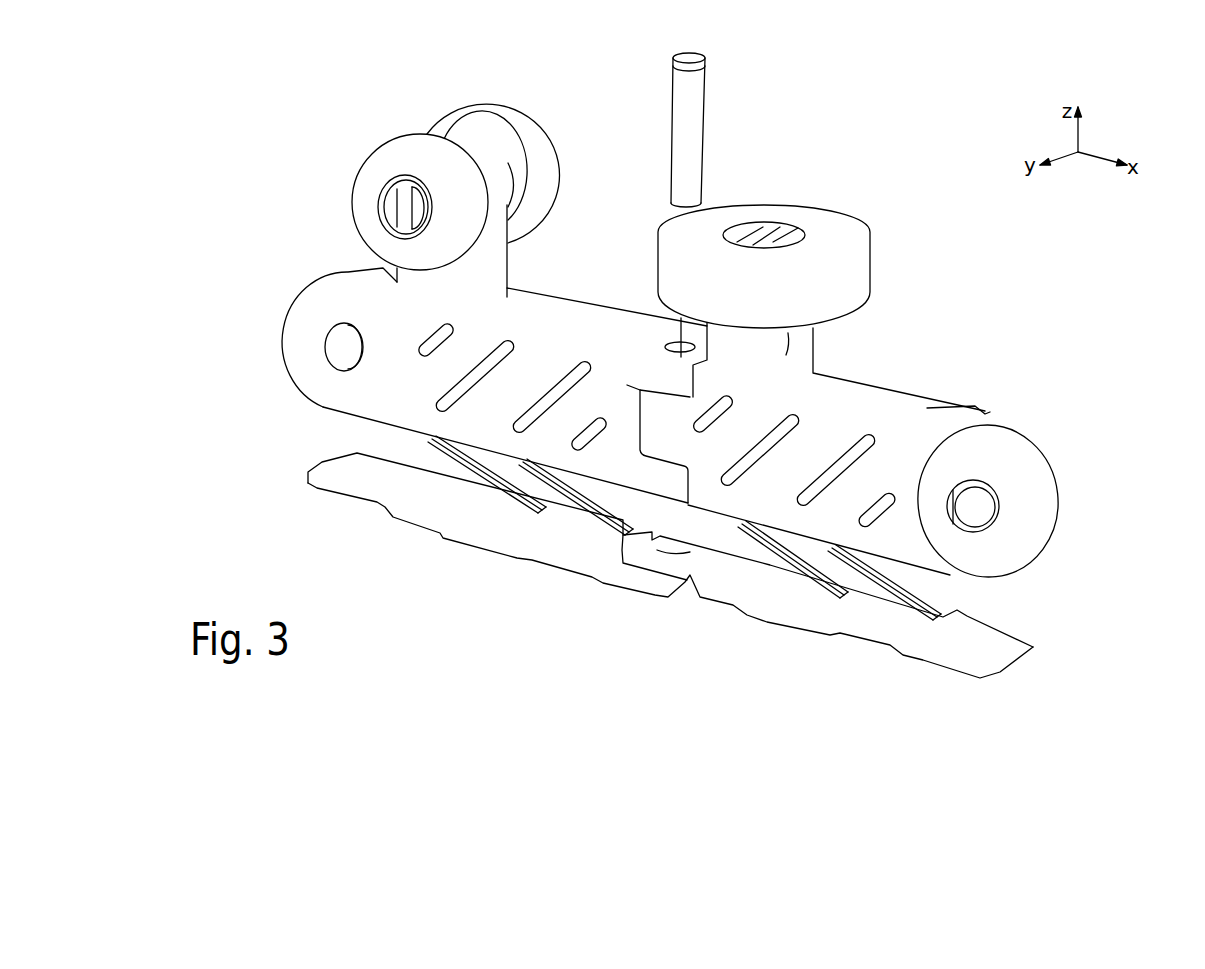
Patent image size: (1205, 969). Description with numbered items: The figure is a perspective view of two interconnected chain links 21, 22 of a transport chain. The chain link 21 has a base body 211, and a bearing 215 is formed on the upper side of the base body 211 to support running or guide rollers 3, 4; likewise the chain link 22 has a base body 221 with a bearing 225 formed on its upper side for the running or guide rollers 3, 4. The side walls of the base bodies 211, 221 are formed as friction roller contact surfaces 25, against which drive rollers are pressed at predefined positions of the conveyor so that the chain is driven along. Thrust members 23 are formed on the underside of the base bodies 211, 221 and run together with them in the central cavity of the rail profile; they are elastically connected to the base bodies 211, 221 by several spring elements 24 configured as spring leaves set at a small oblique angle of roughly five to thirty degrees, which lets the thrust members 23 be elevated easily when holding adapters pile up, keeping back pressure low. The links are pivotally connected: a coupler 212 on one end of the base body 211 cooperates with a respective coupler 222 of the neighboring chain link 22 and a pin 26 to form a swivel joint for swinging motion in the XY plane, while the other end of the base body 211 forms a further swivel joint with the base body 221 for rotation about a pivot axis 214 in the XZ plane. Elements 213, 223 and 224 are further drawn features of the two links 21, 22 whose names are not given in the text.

The running or guide roller 3 is at (446, 168).
The running or guide roller 4 is at (781, 249).
The chain link 21 is at (873, 477).
The chain link 22 is at (425, 370).
The thrust member 23 is at (815, 633).
The spring element 24 is at (597, 518).
The friction roller contact surface 25 is at (442, 368).
The pin 26 is at (710, 110).
The base body 211 is at (970, 405).
The coupler 212 is at (652, 437).
The roller 213 is at (1035, 521).
The pivot axis 214 is at (973, 518).
The bearing 215 is at (787, 238).
The base body 221 is at (525, 307).
The coupler 222 is at (640, 472).
The rounded arm 223 is at (307, 297).
The hole 224 is at (333, 353).
The bearing 225 is at (477, 150).